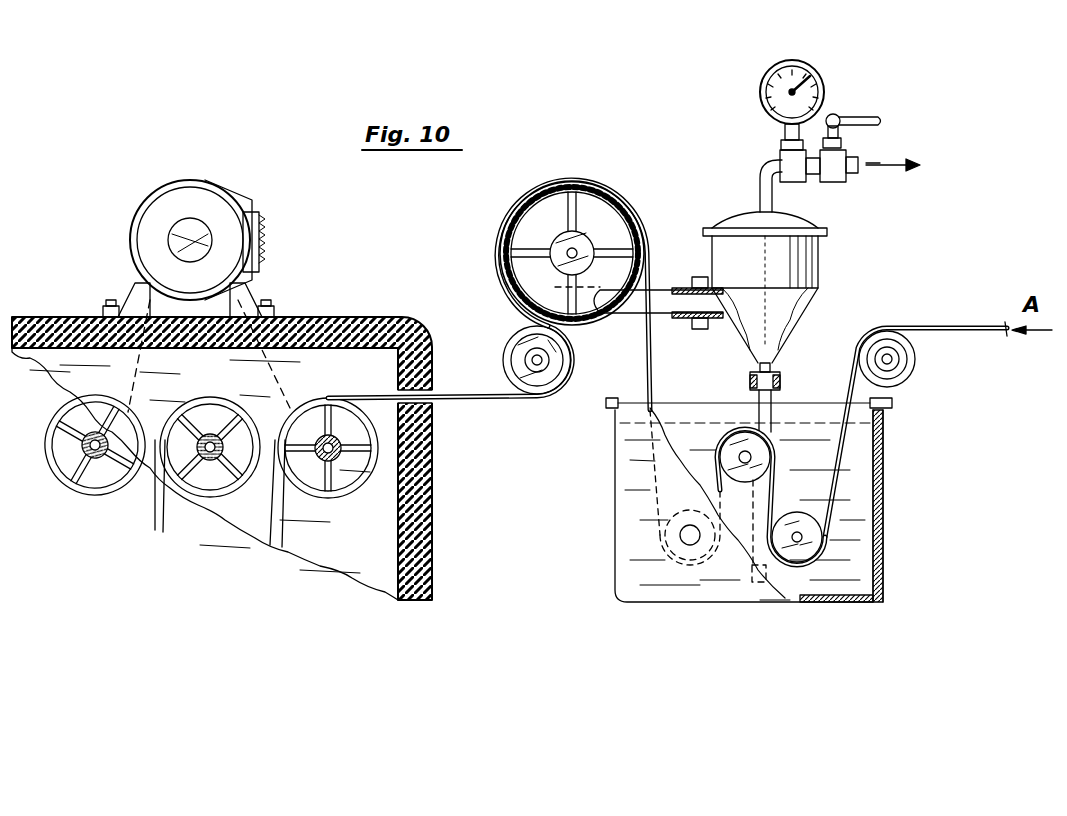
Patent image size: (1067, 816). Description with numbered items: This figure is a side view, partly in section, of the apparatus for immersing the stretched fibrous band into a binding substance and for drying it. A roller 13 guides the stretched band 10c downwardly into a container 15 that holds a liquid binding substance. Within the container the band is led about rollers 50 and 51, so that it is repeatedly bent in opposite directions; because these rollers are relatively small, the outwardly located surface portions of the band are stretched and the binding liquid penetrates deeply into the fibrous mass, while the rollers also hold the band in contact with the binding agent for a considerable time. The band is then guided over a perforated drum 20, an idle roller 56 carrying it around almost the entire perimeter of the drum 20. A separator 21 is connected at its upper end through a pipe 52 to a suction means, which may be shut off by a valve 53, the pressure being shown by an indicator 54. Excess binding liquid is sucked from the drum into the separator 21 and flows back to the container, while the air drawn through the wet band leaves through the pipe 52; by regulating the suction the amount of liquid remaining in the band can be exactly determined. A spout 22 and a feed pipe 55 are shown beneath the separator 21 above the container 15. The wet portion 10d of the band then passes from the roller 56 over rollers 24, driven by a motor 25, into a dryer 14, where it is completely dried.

The stretched band 10c is at (935, 332).
The wet portion of the band 10d is at (470, 398).
The roller 13 is at (905, 362).
The dryer 14 is at (310, 318).
The container 15 is at (640, 492).
The perforated drum 20 is at (605, 188).
The separator 21 is at (812, 256).
The spout 22 is at (775, 368).
The rollers 24 is at (112, 402).
The motor 25 is at (205, 205).
The roller 50 is at (690, 562).
The roller 51 is at (733, 440).
The pipe 52 is at (765, 178).
The valve 53 is at (843, 180).
The indicator 54 is at (815, 97).
The feed pipe 55 is at (775, 425).
The idle roller 56 is at (506, 342).